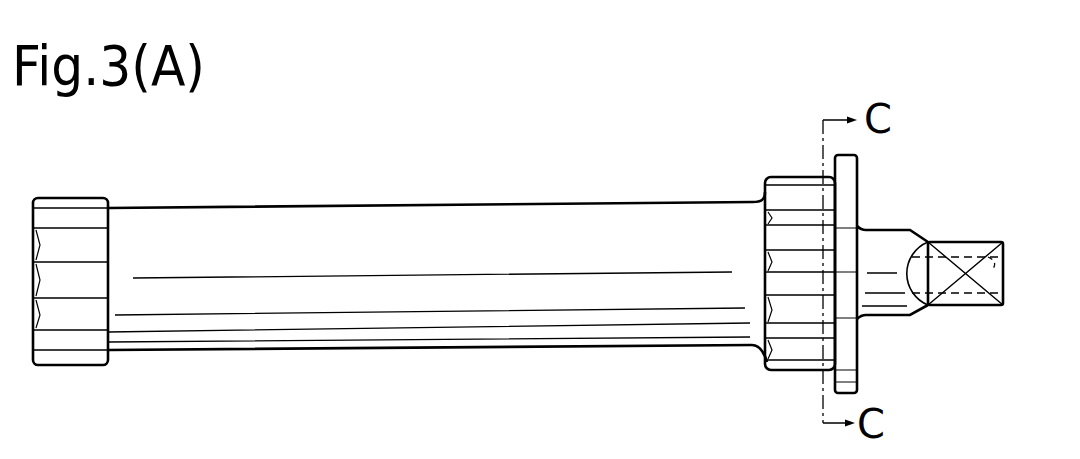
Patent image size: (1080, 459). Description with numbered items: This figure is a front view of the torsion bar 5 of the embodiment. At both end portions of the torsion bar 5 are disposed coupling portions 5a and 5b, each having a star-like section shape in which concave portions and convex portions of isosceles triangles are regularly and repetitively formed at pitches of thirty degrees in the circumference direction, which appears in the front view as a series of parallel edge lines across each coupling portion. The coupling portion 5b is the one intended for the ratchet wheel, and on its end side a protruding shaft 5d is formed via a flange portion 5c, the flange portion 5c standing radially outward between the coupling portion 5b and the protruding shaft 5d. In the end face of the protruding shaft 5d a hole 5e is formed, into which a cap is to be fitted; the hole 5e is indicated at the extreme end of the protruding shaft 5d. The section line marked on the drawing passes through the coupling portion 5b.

The torsion bar 5 is at (589, 150).
The coupling portion 5a is at (79, 201).
The coupling portion 5b is at (787, 178).
The flange portion 5c is at (857, 372).
The protruding shaft 5d is at (959, 222).
The hole 5e is at (1005, 263).